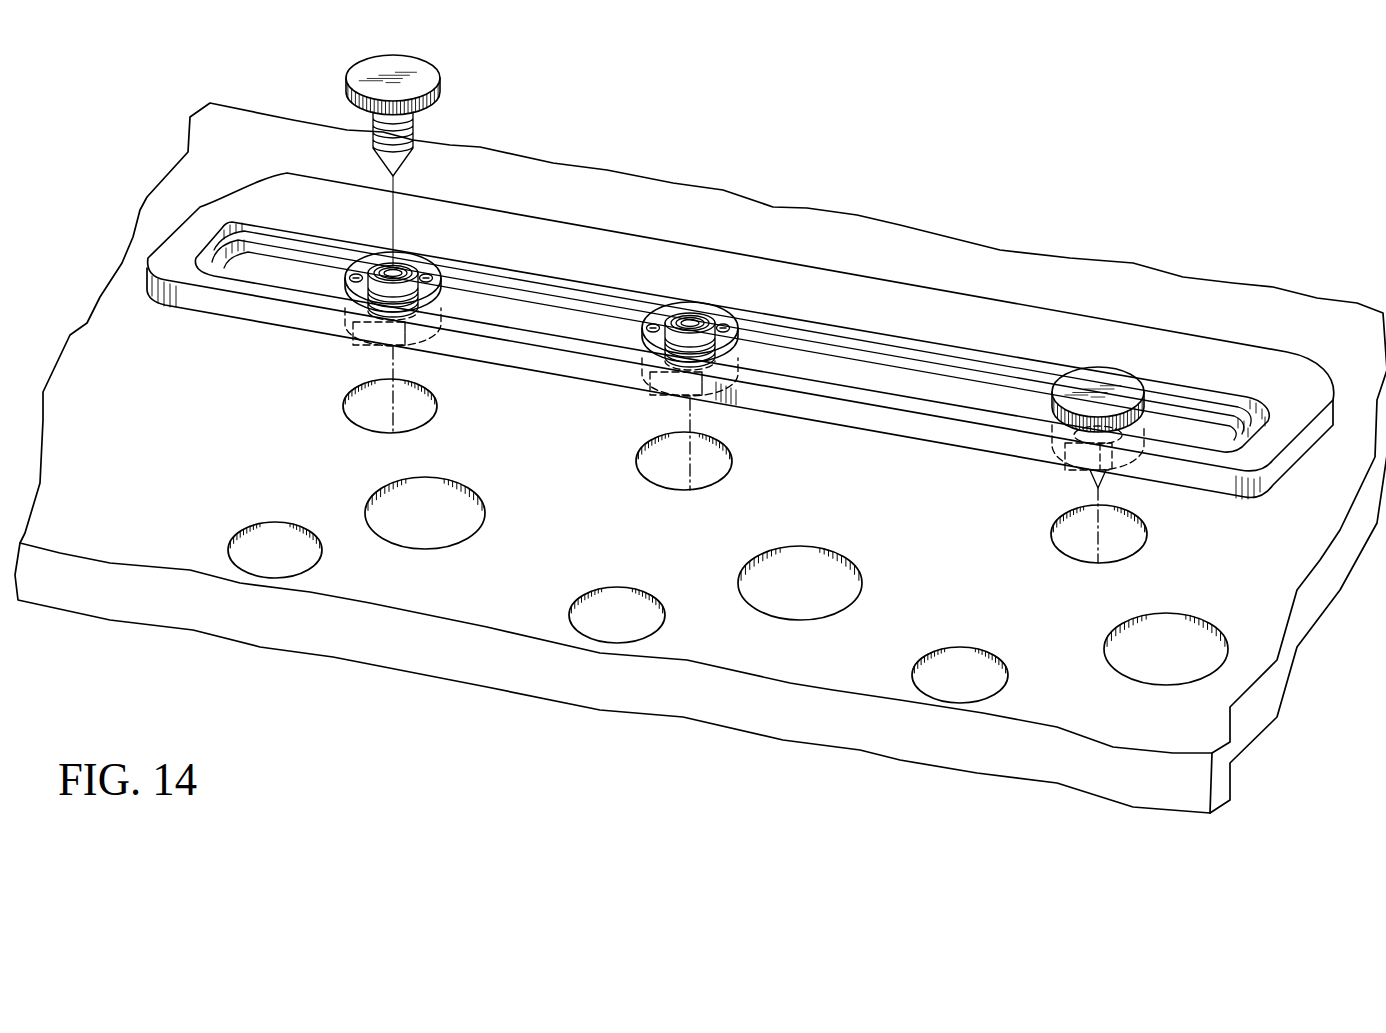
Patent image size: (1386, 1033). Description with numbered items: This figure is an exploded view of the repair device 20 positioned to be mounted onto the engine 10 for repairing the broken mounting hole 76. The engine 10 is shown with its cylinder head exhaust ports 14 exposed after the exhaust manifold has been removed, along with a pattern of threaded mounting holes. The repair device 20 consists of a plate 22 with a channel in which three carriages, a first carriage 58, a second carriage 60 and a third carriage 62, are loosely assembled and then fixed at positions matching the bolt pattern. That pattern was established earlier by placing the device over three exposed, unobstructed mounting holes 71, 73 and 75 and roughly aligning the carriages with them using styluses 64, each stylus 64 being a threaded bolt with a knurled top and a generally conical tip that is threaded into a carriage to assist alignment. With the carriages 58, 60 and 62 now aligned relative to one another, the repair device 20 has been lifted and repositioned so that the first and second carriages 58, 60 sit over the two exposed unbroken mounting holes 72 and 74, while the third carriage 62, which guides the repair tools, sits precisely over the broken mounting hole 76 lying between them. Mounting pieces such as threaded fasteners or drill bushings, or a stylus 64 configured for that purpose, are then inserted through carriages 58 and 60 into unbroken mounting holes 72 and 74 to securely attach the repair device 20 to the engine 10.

The engine 10 is at (903, 212).
The cylinder head exhaust ports 14 is at (1163, 648).
The repair device 20 is at (615, 220).
The plate 22 is at (1018, 332).
The first carriage 58 is at (423, 267).
The second carriage 60 is at (1142, 418).
The third carriage 62 is at (710, 313).
The stylus 64 is at (447, 67).
The mounting hole 71 is at (273, 537).
The unbroken mounting hole 72 is at (372, 410).
The mounting hole 73 is at (968, 668).
The unbroken mounting hole 74 is at (1080, 533).
The mounting hole 75 is at (627, 603).
The broken mounting hole 76 is at (673, 460).